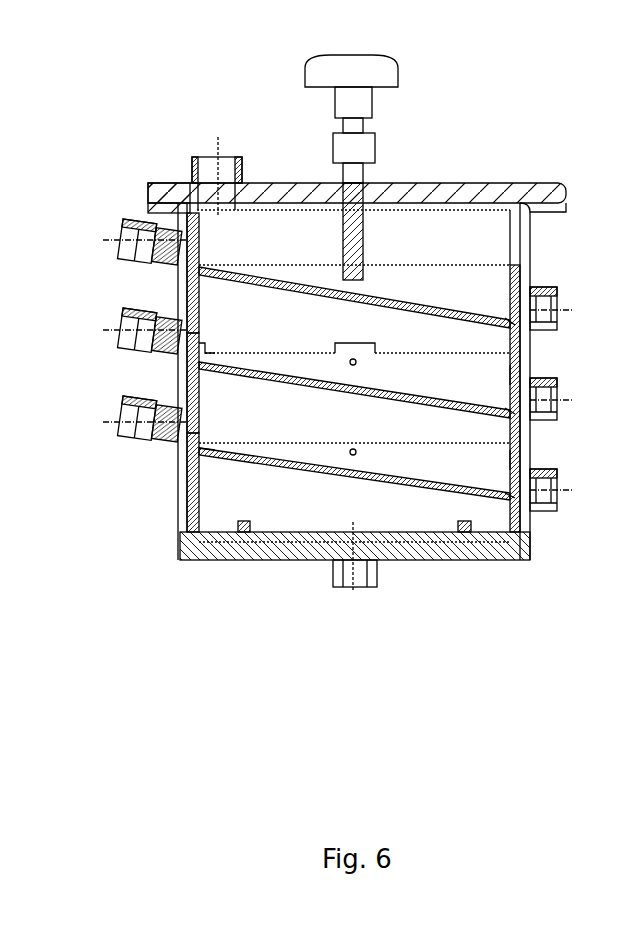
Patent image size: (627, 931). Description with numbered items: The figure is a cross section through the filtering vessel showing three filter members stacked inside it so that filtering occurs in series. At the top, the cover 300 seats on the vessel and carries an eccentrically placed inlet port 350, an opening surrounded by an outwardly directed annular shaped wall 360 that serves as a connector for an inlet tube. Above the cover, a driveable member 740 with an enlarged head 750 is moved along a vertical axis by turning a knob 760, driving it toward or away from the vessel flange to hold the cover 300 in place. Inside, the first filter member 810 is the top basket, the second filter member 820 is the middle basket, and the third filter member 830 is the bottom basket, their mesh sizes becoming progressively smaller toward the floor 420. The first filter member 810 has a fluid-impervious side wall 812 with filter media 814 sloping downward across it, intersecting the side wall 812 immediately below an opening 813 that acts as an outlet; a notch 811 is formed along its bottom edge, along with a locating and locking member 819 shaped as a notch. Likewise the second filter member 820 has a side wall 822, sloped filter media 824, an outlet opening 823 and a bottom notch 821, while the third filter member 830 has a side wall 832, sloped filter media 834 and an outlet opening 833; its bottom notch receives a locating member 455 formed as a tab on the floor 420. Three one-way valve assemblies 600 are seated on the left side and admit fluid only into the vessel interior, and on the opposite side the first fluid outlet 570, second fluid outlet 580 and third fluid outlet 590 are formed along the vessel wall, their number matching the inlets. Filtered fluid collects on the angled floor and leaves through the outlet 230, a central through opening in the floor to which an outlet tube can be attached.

The knob 760 is at (365, 73).
The driveable member 740 is at (372, 98).
The enlarged head 750 is at (355, 178).
The cover 300 is at (425, 189).
The annular shaped wall 360 is at (192, 166).
The inlet port 350 is at (226, 150).
The side wall 812 is at (516, 272).
The first filter member 810 is at (190, 300).
The second filter member 820 is at (182, 392).
The third filter member 830 is at (186, 490).
The filter media 814 is at (421, 294).
The opening 813 is at (510, 305).
The opening 811 is at (205, 343).
The locating and locking member 819 is at (368, 336).
The filter media 824 is at (418, 397).
The opening 823 is at (510, 402).
The opening 821 is at (196, 448).
The filter media 834 is at (394, 489).
The opening 833 is at (514, 487).
The side wall 822 is at (520, 378).
The side wall 832 is at (520, 458).
The first fluid outlet 570 is at (536, 300).
The second fluid outlet 580 is at (560, 418).
The third fluid outlet 590 is at (545, 510).
The valve assembly 600 is at (160, 258).
The floor 420 is at (422, 561).
The locating member 455 is at (247, 527).
The outlet 230 is at (333, 570).